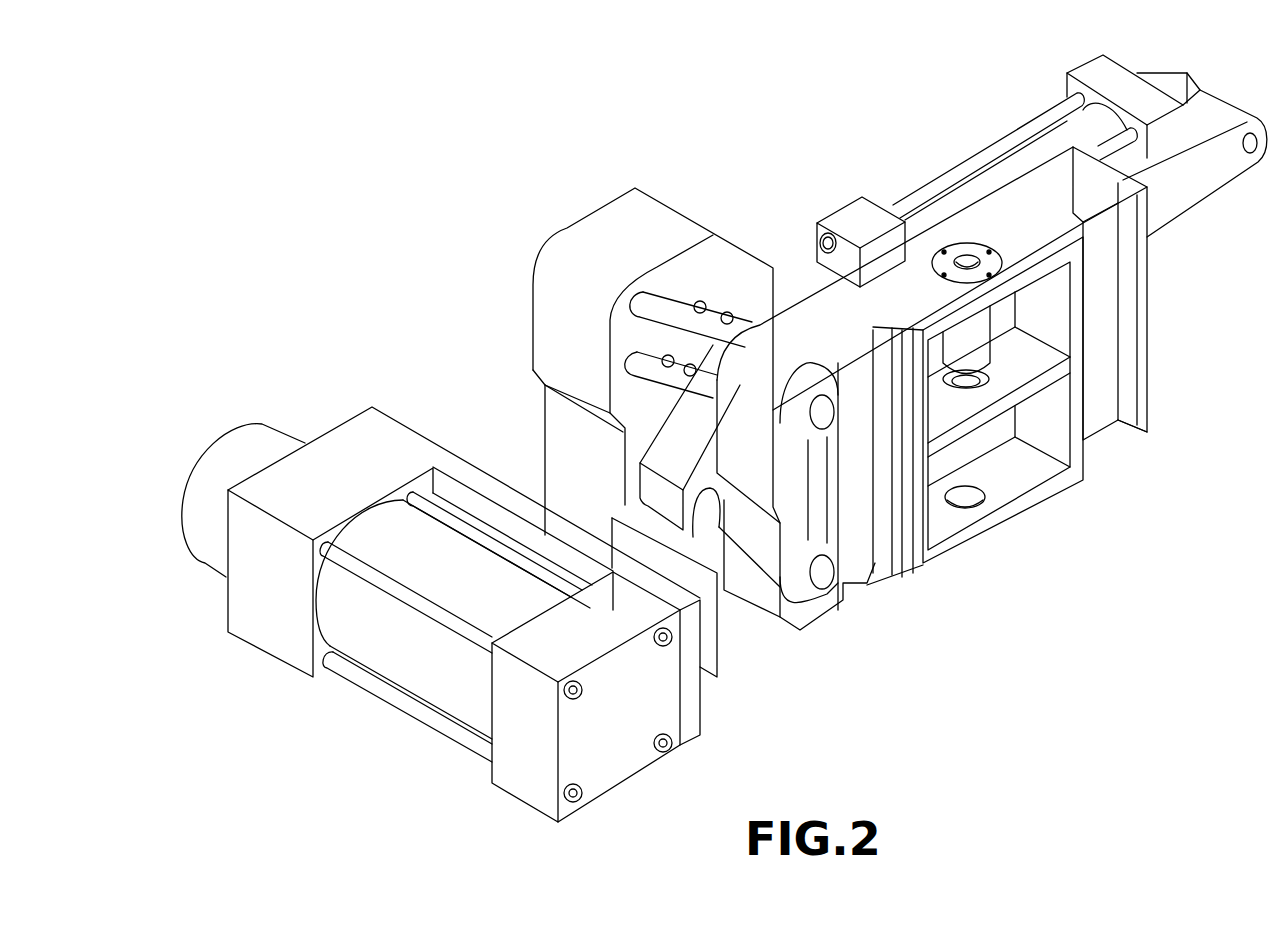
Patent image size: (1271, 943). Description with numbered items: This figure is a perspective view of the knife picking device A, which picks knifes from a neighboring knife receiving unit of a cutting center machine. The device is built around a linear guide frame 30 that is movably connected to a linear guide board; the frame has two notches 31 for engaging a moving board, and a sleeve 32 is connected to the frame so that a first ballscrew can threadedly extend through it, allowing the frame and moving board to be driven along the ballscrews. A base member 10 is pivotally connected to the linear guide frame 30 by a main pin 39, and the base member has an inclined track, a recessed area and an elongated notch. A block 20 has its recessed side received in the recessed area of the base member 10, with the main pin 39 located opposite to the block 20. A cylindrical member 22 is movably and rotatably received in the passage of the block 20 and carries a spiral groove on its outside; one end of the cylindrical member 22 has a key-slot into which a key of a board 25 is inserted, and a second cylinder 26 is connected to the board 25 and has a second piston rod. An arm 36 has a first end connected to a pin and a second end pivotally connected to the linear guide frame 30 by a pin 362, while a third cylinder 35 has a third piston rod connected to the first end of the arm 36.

The knife picking device A is at (452, 332).
The base member 10 is at (600, 230).
The block 20 is at (752, 643).
The cylindrical member 22 is at (662, 567).
The board 25 is at (688, 740).
The second cylinder 26 is at (400, 670).
The linear guide frame 30 is at (895, 285).
The notches 31 is at (1103, 432).
The sleeve 32 is at (980, 330).
The third cylinder 35 is at (994, 168).
The arm 36 is at (667, 498).
The main pin 39 is at (665, 320).
The pin 362 is at (790, 622).